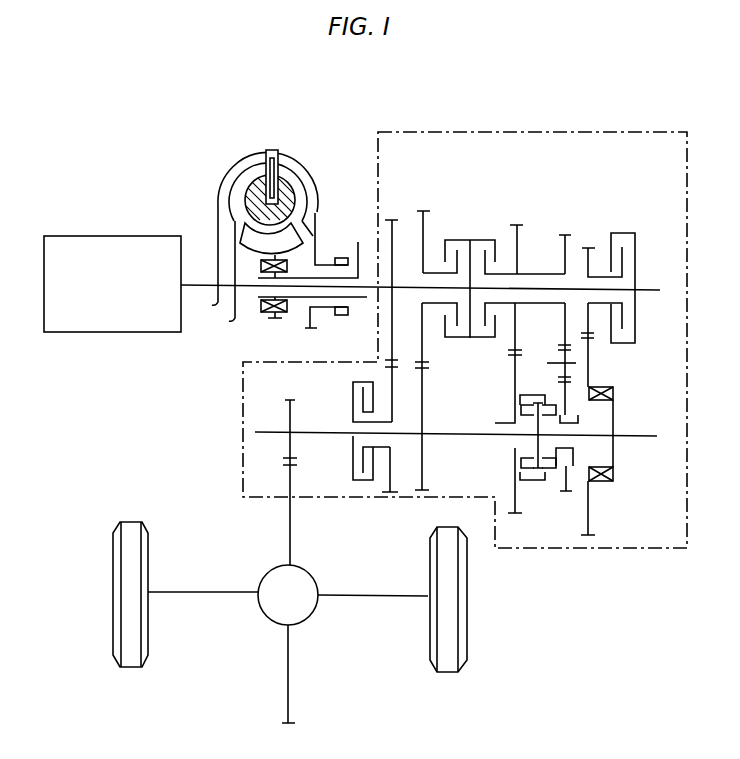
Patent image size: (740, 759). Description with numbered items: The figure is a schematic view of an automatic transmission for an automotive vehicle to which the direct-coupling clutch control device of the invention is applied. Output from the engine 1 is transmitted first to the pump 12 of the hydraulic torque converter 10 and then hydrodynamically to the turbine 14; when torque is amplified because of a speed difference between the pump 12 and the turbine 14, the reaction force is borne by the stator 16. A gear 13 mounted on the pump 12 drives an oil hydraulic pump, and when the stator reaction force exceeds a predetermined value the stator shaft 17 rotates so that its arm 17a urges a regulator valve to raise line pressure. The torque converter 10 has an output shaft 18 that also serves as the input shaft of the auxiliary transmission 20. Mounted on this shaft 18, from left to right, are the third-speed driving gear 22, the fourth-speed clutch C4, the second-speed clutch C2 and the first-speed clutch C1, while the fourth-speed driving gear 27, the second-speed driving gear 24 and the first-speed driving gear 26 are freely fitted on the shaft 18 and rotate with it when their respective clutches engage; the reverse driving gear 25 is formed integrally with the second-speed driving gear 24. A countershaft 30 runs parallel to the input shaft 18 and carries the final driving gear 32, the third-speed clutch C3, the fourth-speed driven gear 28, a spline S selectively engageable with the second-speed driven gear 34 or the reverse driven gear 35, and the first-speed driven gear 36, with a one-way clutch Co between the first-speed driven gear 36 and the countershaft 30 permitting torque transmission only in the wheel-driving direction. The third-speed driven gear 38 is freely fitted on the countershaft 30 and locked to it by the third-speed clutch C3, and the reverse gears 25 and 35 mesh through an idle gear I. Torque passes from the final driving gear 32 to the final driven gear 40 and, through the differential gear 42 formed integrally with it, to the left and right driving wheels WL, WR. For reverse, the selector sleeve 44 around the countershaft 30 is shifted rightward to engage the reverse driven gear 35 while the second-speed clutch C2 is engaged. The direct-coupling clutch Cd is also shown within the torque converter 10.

The engine 1 is at (118, 237).
The hydraulic torque converter 10 is at (265, 232).
The pump 12 is at (300, 181).
The gear 13 is at (340, 258).
The turbine 14 is at (245, 163).
The stator 16 is at (233, 277).
The stator shaft 17 is at (318, 278).
The arm 17a is at (372, 240).
The output shaft 18 is at (302, 287).
The auxiliary transmission 20 is at (656, 123).
The third-speed driving gear 22 is at (382, 324).
The second-speed driving gear 24 is at (519, 258).
The reverse driving gear 25 is at (566, 245).
The first-speed driving gear 26 is at (590, 258).
The fourth-speed driving gear 27 is at (423, 235).
The fourth-speed driven gear 28 is at (423, 390).
The countershaft 30 is at (270, 432).
The final driving gear 32 is at (292, 418).
The second-speed driven gear 34 is at (513, 388).
The reverse driven gear 35 is at (570, 478).
The first-speed driven gear 36 is at (588, 381).
The third-speed driven gear 38 is at (392, 400).
The final driven gear 40 is at (291, 527).
The differential gear 42 is at (298, 613).
The selector sleeve 44 is at (535, 480).
The first-speed clutch C1 is at (636, 252).
The second-speed clutch C2 is at (490, 240).
The third-speed clutch C3 is at (353, 451).
The fourth-speed clutch C4 is at (456, 240).
The lock-up clutch Cd is at (264, 150).
The one-way clutch Co is at (600, 482).
The idle gear I is at (563, 363).
The spline S is at (522, 443).
The left driving wheel WL is at (126, 662).
The right driving wheel WR is at (450, 667).